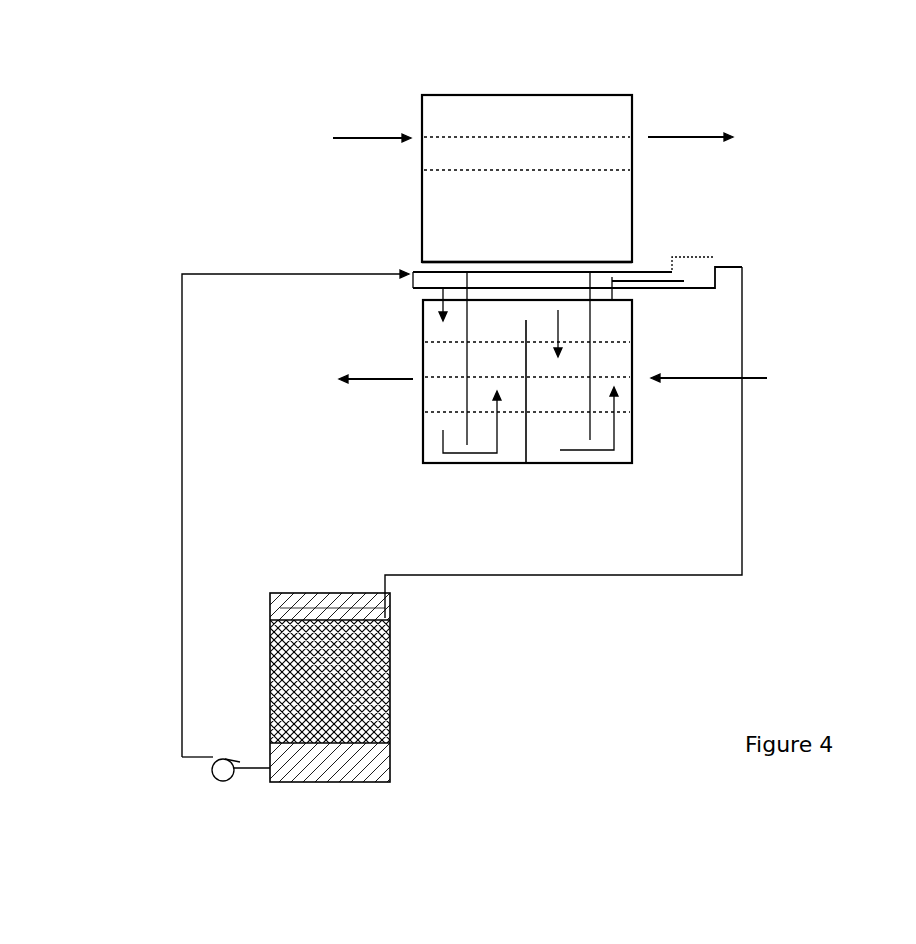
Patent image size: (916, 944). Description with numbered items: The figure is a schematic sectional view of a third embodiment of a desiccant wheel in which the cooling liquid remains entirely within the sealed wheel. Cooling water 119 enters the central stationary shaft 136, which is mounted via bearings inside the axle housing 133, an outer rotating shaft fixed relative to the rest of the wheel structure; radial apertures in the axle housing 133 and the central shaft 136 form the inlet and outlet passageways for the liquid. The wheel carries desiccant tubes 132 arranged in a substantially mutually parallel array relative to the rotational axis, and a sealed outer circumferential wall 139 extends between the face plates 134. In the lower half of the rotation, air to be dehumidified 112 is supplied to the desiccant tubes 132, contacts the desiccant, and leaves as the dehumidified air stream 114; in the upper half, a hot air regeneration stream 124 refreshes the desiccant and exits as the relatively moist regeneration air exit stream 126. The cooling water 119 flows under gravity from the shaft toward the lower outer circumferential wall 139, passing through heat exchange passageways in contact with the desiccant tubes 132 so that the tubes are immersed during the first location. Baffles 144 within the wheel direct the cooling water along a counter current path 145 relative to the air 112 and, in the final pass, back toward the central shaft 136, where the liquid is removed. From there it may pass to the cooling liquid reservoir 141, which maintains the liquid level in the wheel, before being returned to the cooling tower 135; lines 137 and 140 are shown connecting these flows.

The air to be dehumidified 112 is at (745, 382).
The dehumidified air stream 114 is at (347, 383).
The cooling water 119 is at (429, 524).
The hot air regeneration stream 124 is at (342, 143).
The regeneration air exit stream 126 is at (728, 141).
The desiccant tubes 132 is at (540, 428).
The axle housing 133 is at (485, 256).
The face plates 134 is at (613, 113).
The cooling tower 135 is at (392, 700).
The central stationary shaft 136 is at (421, 258).
The connecting line 137 is at (643, 272).
The outer circumferential wall 139 is at (634, 465).
The header line 140 is at (422, 309).
The cooling liquid reservoir 141 is at (705, 254).
The baffles 144 is at (520, 443).
The counter current path 145 is at (430, 446).